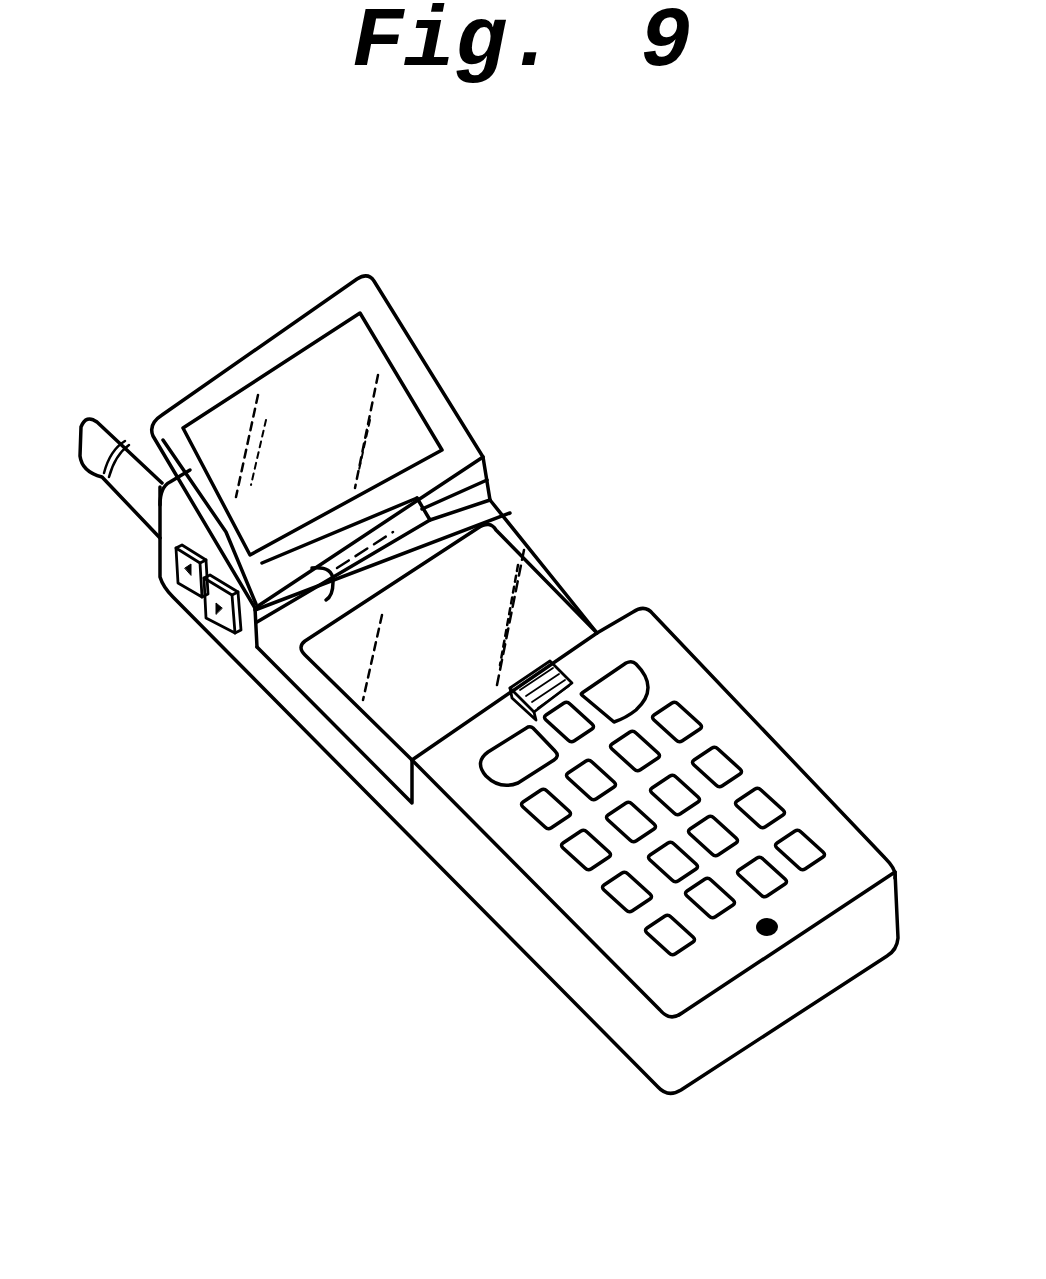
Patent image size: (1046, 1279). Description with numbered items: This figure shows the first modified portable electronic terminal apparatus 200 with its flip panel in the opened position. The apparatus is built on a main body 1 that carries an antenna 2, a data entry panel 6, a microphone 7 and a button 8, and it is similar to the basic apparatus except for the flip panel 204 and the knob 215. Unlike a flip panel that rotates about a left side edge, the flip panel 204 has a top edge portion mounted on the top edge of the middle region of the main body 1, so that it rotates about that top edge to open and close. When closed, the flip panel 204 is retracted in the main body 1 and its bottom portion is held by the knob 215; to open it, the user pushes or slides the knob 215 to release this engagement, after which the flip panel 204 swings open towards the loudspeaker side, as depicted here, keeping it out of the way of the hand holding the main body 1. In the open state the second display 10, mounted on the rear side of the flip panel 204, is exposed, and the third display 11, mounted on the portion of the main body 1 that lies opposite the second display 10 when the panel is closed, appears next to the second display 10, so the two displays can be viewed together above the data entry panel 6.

The first modified portable electronic terminal apparatus 200 is at (723, 360).
The main body 1 is at (715, 680).
The antenna 2 is at (120, 430).
The data entry panel 6 is at (742, 756).
The microphone 7 is at (766, 938).
The button 8 is at (188, 592).
The second display 10 is at (402, 410).
The third display 11 is at (533, 583).
The flip panel 204 is at (412, 318).
The knob 215 is at (545, 668).